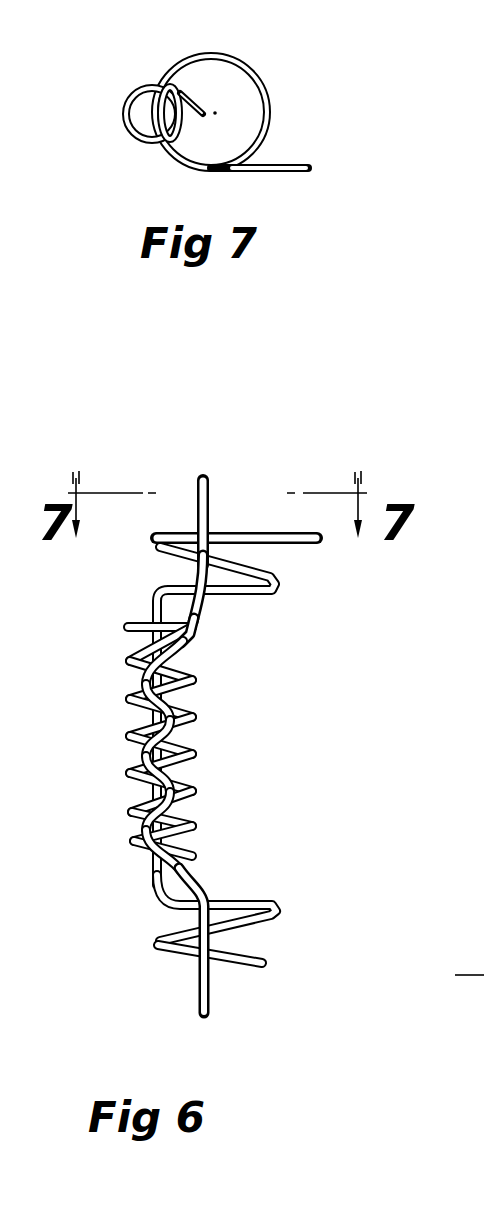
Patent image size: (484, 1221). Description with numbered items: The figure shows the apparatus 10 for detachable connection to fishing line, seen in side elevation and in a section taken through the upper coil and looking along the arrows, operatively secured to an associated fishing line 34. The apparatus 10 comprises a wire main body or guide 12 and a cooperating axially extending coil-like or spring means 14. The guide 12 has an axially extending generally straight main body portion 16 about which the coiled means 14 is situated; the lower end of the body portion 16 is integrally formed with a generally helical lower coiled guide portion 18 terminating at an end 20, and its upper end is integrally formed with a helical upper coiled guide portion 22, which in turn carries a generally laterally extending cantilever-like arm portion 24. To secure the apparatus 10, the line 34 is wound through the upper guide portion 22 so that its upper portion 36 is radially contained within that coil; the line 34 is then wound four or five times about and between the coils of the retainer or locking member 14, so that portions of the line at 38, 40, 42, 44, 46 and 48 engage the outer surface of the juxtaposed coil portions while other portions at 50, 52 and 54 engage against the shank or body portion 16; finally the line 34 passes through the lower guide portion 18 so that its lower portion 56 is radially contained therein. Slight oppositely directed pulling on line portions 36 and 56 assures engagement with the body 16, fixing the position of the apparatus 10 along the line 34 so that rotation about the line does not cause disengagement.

In FIG. 7, the apparatus 10 is at (232, 108).
In FIG. 6, the apparatus 10 is at (220, 729).
In FIG. 7, the main body or guide 12 is at (223, 108).
In FIG. 6, the main body or guide 12 is at (180, 729).
In FIG. 7, the coil-like or spring means 14 is at (136, 77).
In FIG. 6, the coil-like or spring means 14 is at (184, 765).
In FIG. 7, the main body portion 16 is at (143, 144).
In FIG. 6, the main body portion 16 is at (122, 735).
In FIG. 6, the lower coiled guide portion 18 is at (278, 914).
In FIG. 6, the end 20 is at (266, 966).
In FIG. 7, the upper coiled guide portion 22 is at (249, 63).
In FIG. 6, the upper coiled guide portion 22 is at (267, 771).
In FIG. 7, the cantilever-like arm portion 24 is at (294, 174).
In FIG. 6, the cantilever-like arm portion 24 is at (308, 547).
In FIG. 7, the fishing line 34 is at (203, 93).
In FIG. 6, the fishing line 34 is at (210, 608).
In FIG. 7, the upper portion of line 36 is at (207, 112).
In FIG. 6, the upper portion of line 36 is at (210, 482).
In FIG. 6, the line portion 38 is at (197, 636).
In FIG. 6, the line portion 40 is at (141, 683).
In FIG. 6, the line portion 42 is at (183, 733).
In FIG. 6, the line portion 44 is at (138, 773).
In FIG. 6, the line portion 46 is at (198, 806).
In FIG. 6, the line portion 48 is at (136, 842).
In FIG. 6, the line portion 50 is at (140, 679).
In FIG. 6, the line portion 52 is at (146, 752).
In FIG. 6, the line portion 54 is at (140, 828).
In FIG. 6, the lower portion of line 56 is at (213, 999).